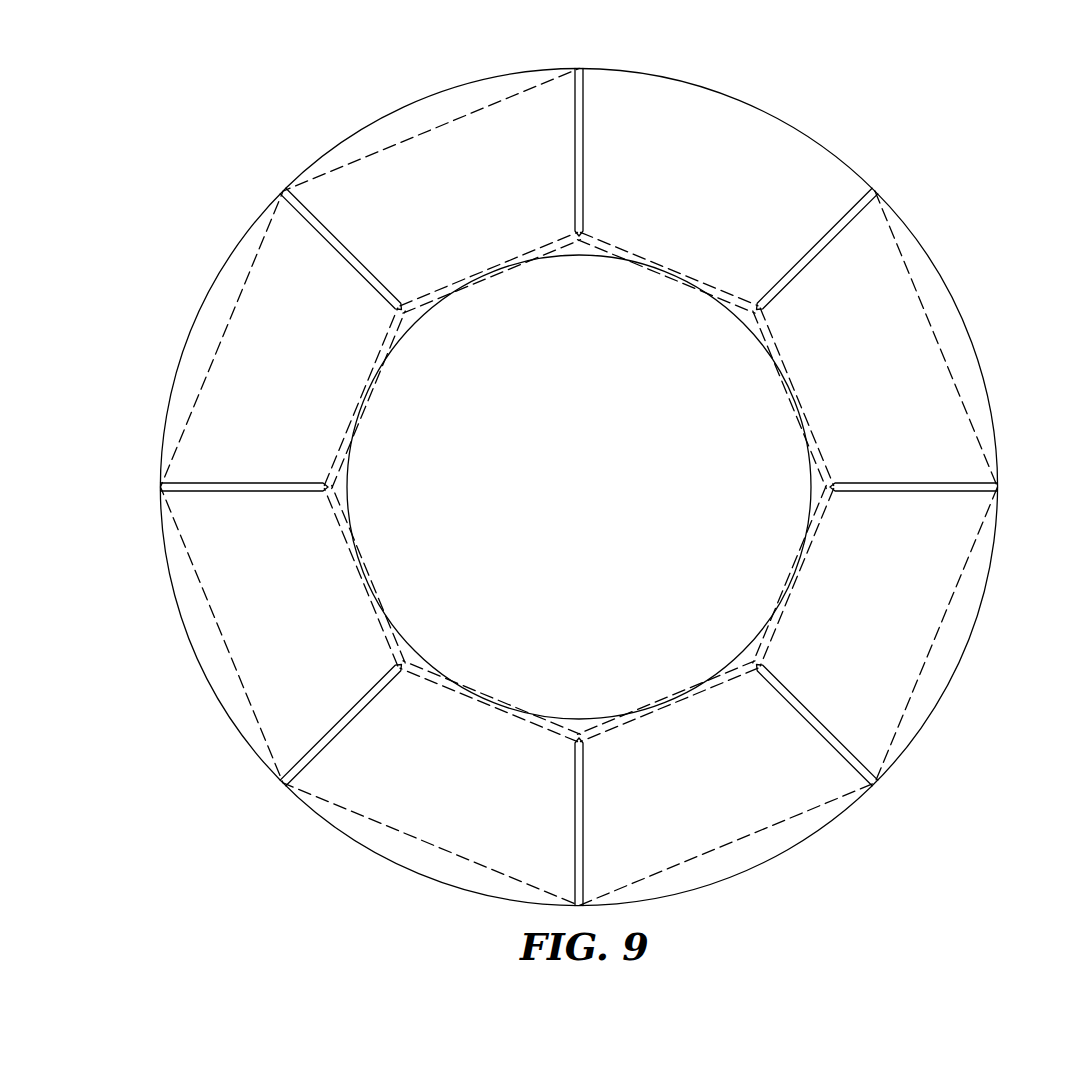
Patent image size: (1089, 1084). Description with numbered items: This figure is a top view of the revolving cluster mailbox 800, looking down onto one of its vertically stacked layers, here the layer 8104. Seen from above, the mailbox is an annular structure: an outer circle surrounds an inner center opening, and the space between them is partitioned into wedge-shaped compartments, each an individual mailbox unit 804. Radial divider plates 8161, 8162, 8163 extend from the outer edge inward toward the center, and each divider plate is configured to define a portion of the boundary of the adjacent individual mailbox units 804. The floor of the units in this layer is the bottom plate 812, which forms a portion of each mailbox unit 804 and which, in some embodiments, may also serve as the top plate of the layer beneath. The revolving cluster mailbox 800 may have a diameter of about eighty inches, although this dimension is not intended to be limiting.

The revolving cluster mailbox 800 is at (182, 214).
The layer 8104 is at (755, 80).
The individual mailbox unit 804 is at (900, 364).
The bottom plate 812 is at (838, 234).
The divider plate 8161 is at (957, 488).
The divider plate 8162 is at (863, 764).
The divider plate 8163 is at (580, 800).